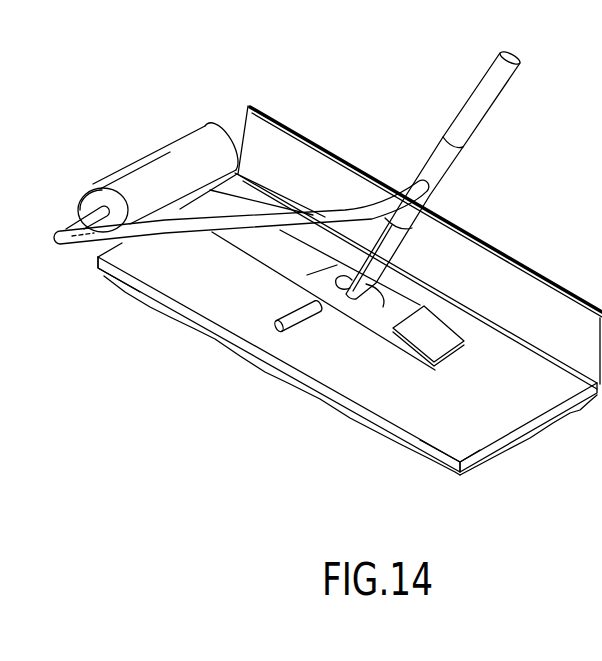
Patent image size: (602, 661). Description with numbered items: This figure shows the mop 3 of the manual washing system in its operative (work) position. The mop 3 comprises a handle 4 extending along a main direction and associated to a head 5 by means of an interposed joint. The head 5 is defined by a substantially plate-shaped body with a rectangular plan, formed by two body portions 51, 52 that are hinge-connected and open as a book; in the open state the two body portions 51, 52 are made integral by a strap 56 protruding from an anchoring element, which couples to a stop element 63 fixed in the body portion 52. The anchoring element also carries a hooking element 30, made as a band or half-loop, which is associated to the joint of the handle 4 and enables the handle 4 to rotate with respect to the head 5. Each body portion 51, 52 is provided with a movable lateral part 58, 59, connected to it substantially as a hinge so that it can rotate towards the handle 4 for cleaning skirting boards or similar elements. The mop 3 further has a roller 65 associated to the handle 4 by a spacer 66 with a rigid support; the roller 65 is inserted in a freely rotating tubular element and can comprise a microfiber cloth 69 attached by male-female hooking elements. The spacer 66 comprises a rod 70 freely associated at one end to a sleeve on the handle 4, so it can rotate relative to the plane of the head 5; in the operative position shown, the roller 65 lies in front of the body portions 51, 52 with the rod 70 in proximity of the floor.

The mop 3 is at (431, 97).
The handle 4 is at (493, 91).
The head 5 is at (381, 461).
The hooking element 30 is at (400, 262).
The body portion 51 is at (137, 253).
The body portion 52 is at (450, 414).
The strap 56 is at (388, 327).
The movable lateral part 58 is at (313, 180).
The movable lateral part 59 is at (587, 288).
The stop element 63 is at (430, 330).
The roller 65 is at (143, 170).
The spacer 66 is at (192, 266).
The microfiber cloth 69 is at (221, 131).
The rod 70 is at (276, 251).